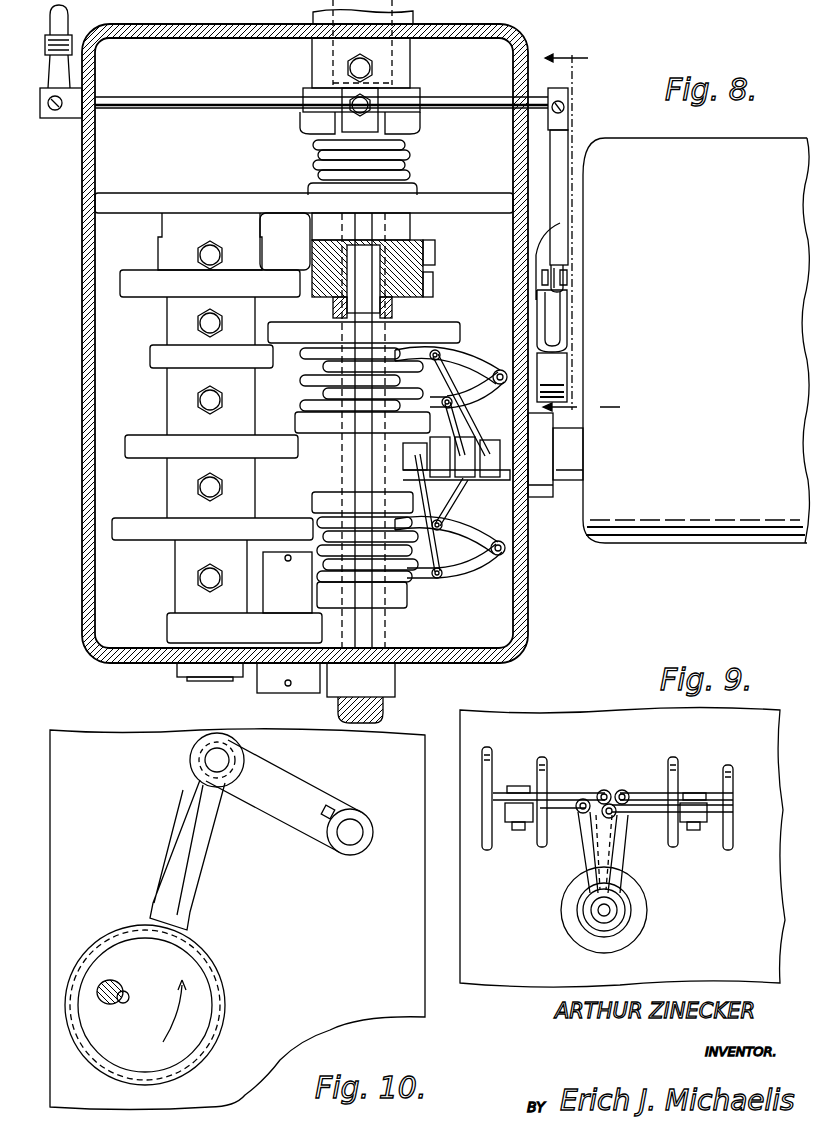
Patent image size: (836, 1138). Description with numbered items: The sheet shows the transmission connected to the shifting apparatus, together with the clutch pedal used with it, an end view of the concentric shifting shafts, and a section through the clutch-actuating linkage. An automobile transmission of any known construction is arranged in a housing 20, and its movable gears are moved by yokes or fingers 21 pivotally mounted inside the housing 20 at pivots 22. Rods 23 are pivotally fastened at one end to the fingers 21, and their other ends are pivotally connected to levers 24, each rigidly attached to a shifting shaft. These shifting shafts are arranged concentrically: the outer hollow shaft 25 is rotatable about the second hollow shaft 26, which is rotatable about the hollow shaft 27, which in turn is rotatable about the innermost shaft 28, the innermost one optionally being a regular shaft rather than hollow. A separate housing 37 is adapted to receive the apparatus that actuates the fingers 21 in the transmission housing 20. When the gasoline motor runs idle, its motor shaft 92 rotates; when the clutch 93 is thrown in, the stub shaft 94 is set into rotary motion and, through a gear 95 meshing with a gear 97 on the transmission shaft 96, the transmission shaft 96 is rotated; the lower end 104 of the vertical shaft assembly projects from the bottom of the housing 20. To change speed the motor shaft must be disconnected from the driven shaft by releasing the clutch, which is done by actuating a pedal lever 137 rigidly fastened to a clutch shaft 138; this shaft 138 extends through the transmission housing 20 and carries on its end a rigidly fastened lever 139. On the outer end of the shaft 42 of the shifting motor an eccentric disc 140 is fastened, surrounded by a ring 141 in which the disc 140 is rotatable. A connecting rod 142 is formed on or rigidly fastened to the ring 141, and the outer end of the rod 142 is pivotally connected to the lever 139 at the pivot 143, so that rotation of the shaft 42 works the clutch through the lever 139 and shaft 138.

In FIG. 8, the transmission housing 20 is at (82, 368).
In FIG. 10, the transmission housing 20 is at (67, 738).
In FIG. 8, the fingers 21 is at (470, 375).
In FIG. 9, the fingers 21 is at (540, 768).
In FIG. 8, the pivot 22 is at (500, 370).
In FIG. 9, the pivot 22 is at (520, 830).
In FIG. 8, the rods 23 is at (455, 400).
In FIG. 9, the rods 23 is at (560, 793).
In FIG. 8, the levers 24 is at (488, 472).
In FIG. 9, the levers 24 is at (605, 836).
In FIG. 8, the outer hollow shaft 25 is at (490, 440).
In FIG. 9, the outer hollow shaft 25 is at (633, 914).
In FIG. 8, the second hollow shaft 26 is at (475, 436).
In FIG. 9, the second hollow shaft 26 is at (625, 918).
In FIG. 8, the hollow shaft 27 is at (403, 445).
In FIG. 9, the hollow shaft 27 is at (604, 922).
In FIG. 8, the innermost shaft 28 is at (405, 462).
In FIG. 9, the innermost shaft 28 is at (598, 912).
In FIG. 8, the housing 37 is at (663, 543).
In FIG. 8, the shaft of the shifting motor 42 is at (570, 325).
In FIG. 10, the shaft of the shifting motor 42 is at (108, 982).
In FIG. 8, the motor shaft 92 is at (405, 65).
In FIG. 8, the clutch 93 is at (305, 135).
In FIG. 8, the stub shaft 94 is at (400, 215).
In FIG. 8, the gear 95 is at (433, 285).
In FIG. 8, the transmission shaft 96 is at (205, 680).
In FIG. 8, the gear 97 is at (140, 290).
In FIG. 8, the spindle end 104 is at (385, 712).
In FIG. 8, the pedal lever 137 is at (65, 38).
In FIG. 8, the clutch shaft 138 is at (208, 100).
In FIG. 10, the clutch shaft 138 is at (352, 830).
In FIG. 8, the lever 139 is at (553, 165).
In FIG. 10, the lever 139 is at (295, 790).
In FIG. 10, the eccentric disc 140 is at (193, 995).
In FIG. 10, the ring 141 is at (215, 1035).
In FIG. 8, the connecting rod 142 is at (545, 240).
In FIG. 10, the connecting rod 142 is at (188, 875).
In FIG. 8, the pivotal connection 143 is at (567, 280).
In FIG. 10, the pivotal connection 143 is at (220, 755).